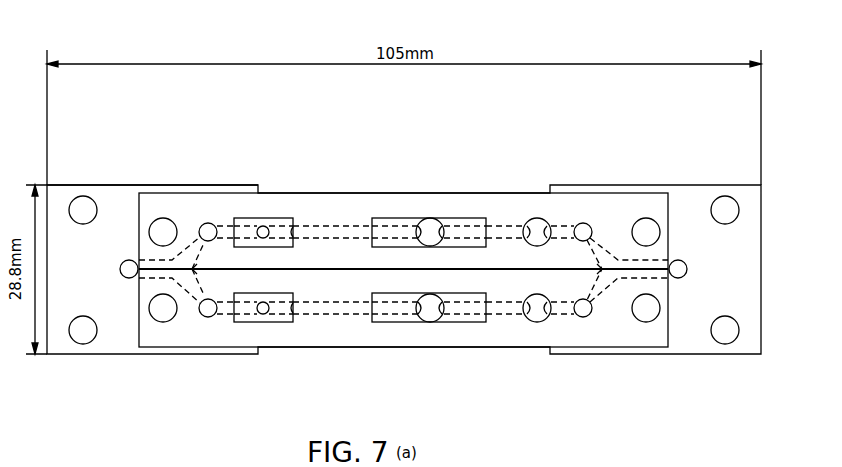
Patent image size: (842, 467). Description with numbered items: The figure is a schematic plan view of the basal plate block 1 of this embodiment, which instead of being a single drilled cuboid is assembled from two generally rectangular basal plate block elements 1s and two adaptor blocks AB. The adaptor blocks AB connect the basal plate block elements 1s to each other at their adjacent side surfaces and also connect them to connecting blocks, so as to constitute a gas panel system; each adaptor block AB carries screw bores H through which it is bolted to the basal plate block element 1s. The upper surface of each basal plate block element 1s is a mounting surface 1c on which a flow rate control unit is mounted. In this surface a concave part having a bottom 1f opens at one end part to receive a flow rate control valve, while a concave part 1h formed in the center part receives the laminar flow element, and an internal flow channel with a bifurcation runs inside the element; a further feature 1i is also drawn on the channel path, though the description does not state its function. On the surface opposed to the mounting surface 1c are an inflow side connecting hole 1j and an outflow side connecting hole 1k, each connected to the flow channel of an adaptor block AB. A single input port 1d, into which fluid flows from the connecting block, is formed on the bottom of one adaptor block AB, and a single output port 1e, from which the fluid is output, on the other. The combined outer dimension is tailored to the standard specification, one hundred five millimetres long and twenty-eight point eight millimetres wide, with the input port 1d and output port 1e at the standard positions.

The basal plate block 1 is at (429, 146).
The basal plate block element 1s is at (405, 193).
The adaptor block AB is at (132, 185).
The screw bore H is at (97, 209).
The input port 1d is at (120, 269).
The output port 1e is at (687, 269).
The mounting surface 1c is at (488, 222).
The concave part having a bottom 1f is at (278, 218).
The concave part 1h is at (450, 218).
The detection well 1i is at (533, 219).
The inflow side connecting hole 1j is at (205, 223).
The outflow side connecting hole 1k is at (584, 223).